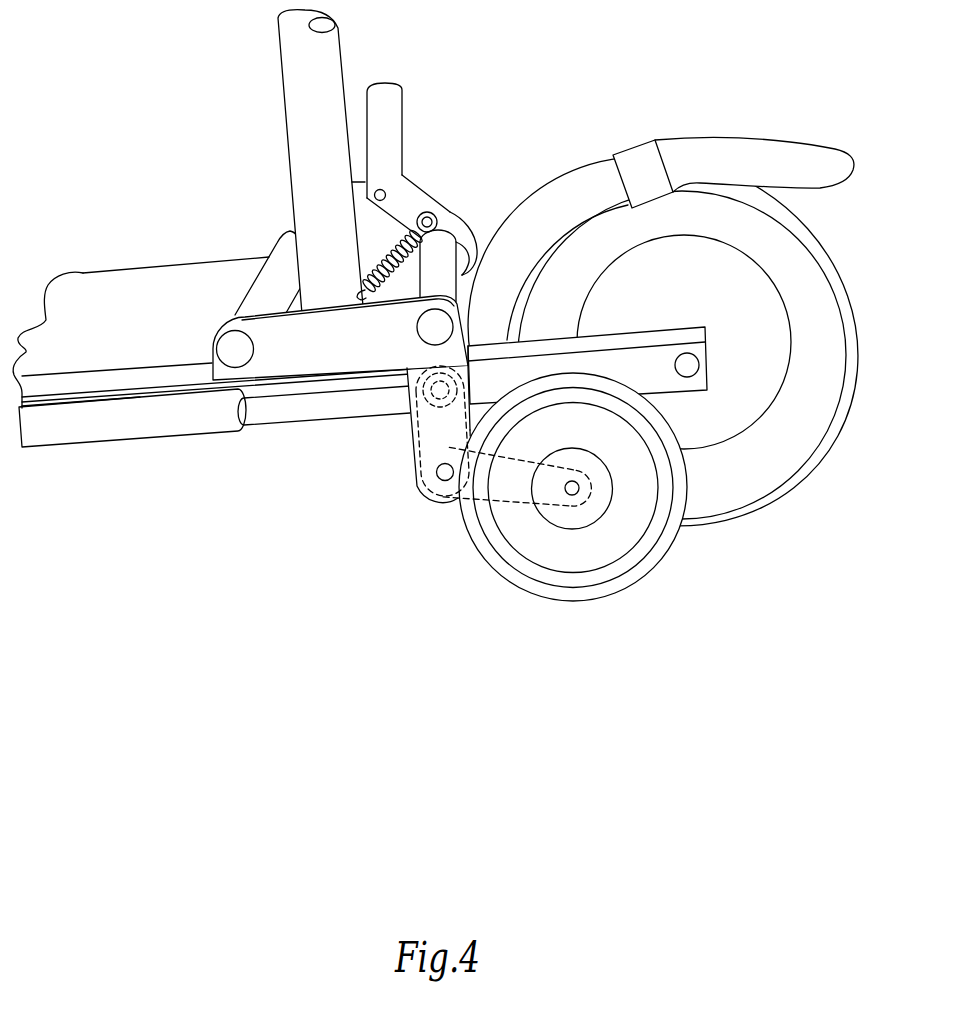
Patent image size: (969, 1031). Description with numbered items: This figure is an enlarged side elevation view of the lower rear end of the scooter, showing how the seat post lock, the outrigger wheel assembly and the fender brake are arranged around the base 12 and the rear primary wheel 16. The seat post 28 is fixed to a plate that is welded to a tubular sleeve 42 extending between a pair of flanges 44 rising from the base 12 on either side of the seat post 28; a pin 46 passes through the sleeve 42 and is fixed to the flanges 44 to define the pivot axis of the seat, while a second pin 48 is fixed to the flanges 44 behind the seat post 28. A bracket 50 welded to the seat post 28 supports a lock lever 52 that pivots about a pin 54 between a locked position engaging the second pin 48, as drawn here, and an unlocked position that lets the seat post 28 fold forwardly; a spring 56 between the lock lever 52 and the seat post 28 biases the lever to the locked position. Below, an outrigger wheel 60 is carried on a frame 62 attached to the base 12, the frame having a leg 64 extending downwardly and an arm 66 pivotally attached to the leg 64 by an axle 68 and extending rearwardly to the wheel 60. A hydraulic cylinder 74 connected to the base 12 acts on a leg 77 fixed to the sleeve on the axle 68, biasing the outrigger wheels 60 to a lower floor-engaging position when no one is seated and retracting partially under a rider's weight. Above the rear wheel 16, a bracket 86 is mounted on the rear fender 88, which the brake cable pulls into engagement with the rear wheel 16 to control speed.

The base 12 is at (93, 288).
The rear primary wheel 16 is at (822, 250).
The seat post 28 is at (292, 100).
The tubular sleeve 42 is at (265, 283).
The flanges 44 is at (268, 330).
The pin 46 is at (228, 350).
The second pin 48 is at (447, 236).
The bracket 50 is at (372, 229).
The lock lever 52 is at (395, 97).
The pin 54 is at (385, 191).
The spring 56 is at (373, 258).
The outrigger wheels 60 is at (628, 577).
The frame 62 is at (412, 418).
The legs 64 is at (440, 499).
The arms 66 is at (513, 493).
The axle 68 is at (441, 475).
The hydraulic cylinder 74 is at (97, 437).
The leg 77 is at (413, 449).
The bracket 86 is at (640, 152).
The rear fender 88 is at (833, 150).